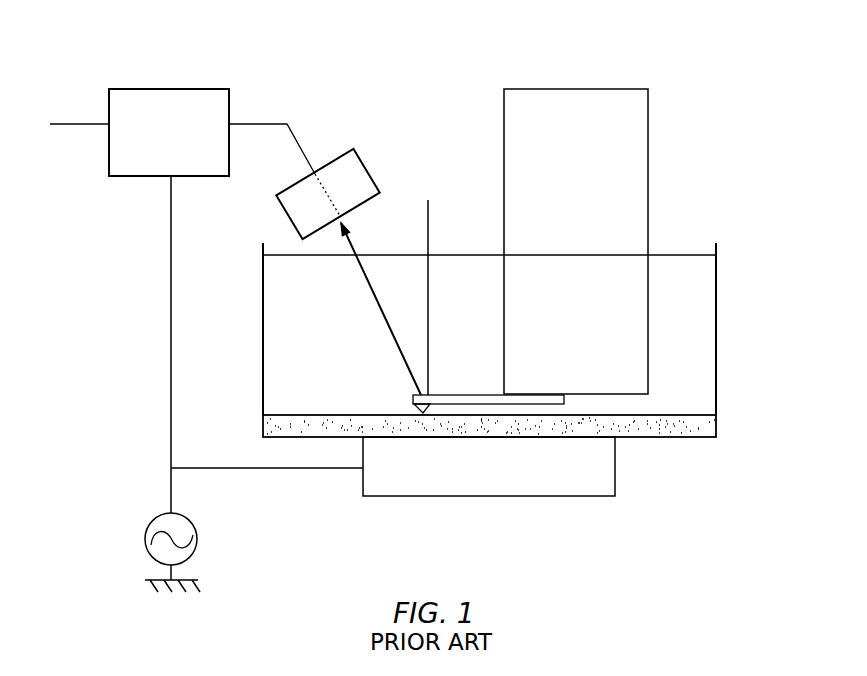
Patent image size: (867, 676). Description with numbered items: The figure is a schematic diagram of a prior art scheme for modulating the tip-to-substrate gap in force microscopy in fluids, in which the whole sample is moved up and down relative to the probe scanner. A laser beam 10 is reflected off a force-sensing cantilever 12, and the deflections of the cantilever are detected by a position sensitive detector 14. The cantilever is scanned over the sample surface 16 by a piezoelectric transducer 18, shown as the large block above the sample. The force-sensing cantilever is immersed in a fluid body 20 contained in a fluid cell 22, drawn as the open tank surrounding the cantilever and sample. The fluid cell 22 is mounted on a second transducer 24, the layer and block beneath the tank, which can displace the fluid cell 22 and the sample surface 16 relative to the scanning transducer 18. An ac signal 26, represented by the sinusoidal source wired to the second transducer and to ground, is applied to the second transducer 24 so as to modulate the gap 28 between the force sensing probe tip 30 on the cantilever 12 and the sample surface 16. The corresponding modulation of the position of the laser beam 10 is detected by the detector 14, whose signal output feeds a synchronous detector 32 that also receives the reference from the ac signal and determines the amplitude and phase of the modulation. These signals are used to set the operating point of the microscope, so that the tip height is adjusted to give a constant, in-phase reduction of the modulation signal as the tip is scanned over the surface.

The laser beam 10 is at (430, 207).
The force-sensing cantilever 12 is at (443, 395).
The position sensitive detector 14 is at (370, 175).
The sample surface 16 is at (703, 414).
The piezoelectric transducer 18 is at (649, 176).
The fluid body 20 is at (673, 339).
The fluid cell 22 is at (717, 298).
The second transducer 24 is at (617, 467).
The ac signal 26 is at (197, 538).
The gap 28 is at (410, 408).
The force sensing probe tip 30 is at (425, 415).
The synchronous detector 32 is at (168, 88).